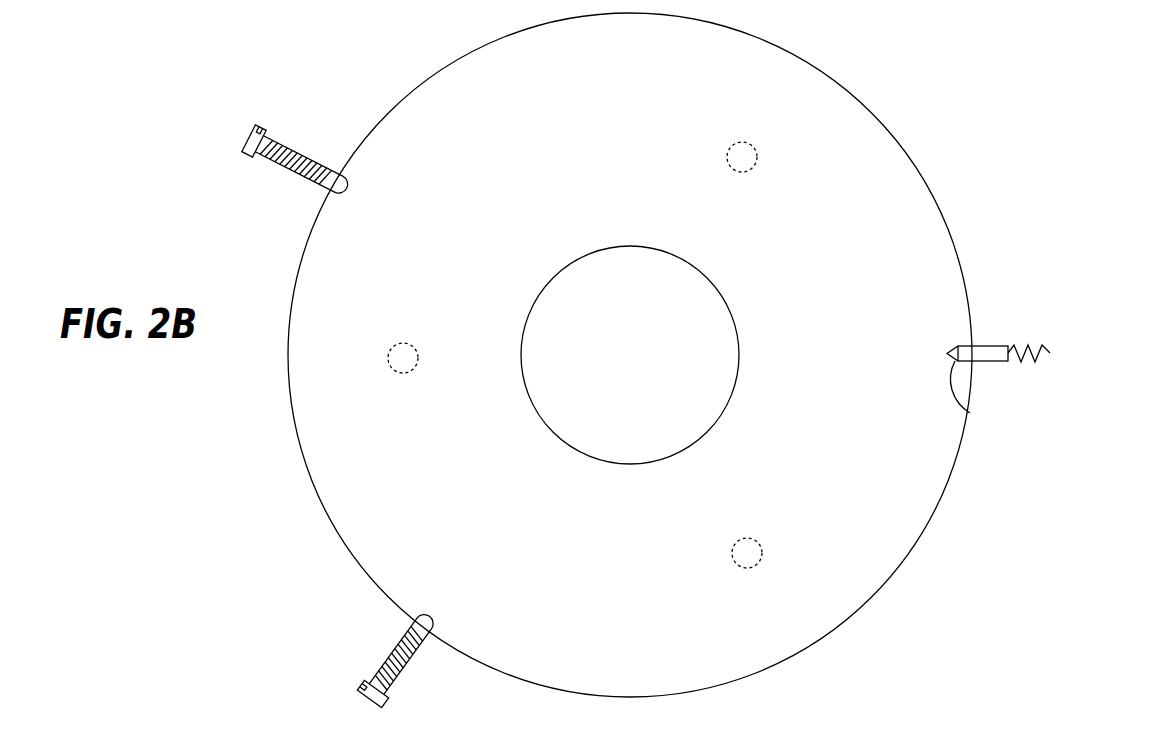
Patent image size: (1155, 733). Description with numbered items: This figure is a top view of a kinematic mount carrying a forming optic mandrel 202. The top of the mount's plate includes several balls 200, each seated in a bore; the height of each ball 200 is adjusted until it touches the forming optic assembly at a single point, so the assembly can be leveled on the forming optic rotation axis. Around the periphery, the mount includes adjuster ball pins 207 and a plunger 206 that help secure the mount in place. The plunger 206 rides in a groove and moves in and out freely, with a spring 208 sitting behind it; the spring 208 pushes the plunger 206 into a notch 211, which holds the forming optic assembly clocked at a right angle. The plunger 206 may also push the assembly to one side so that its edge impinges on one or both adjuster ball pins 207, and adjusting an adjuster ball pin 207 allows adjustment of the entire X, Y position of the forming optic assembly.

The ball 200 is at (755, 150).
The forming optic mandrel 202 is at (567, 336).
The plunger 206 is at (986, 347).
The adjuster ball pin 207 is at (273, 147).
The spring 208 is at (1048, 347).
The notch 211 is at (970, 413).